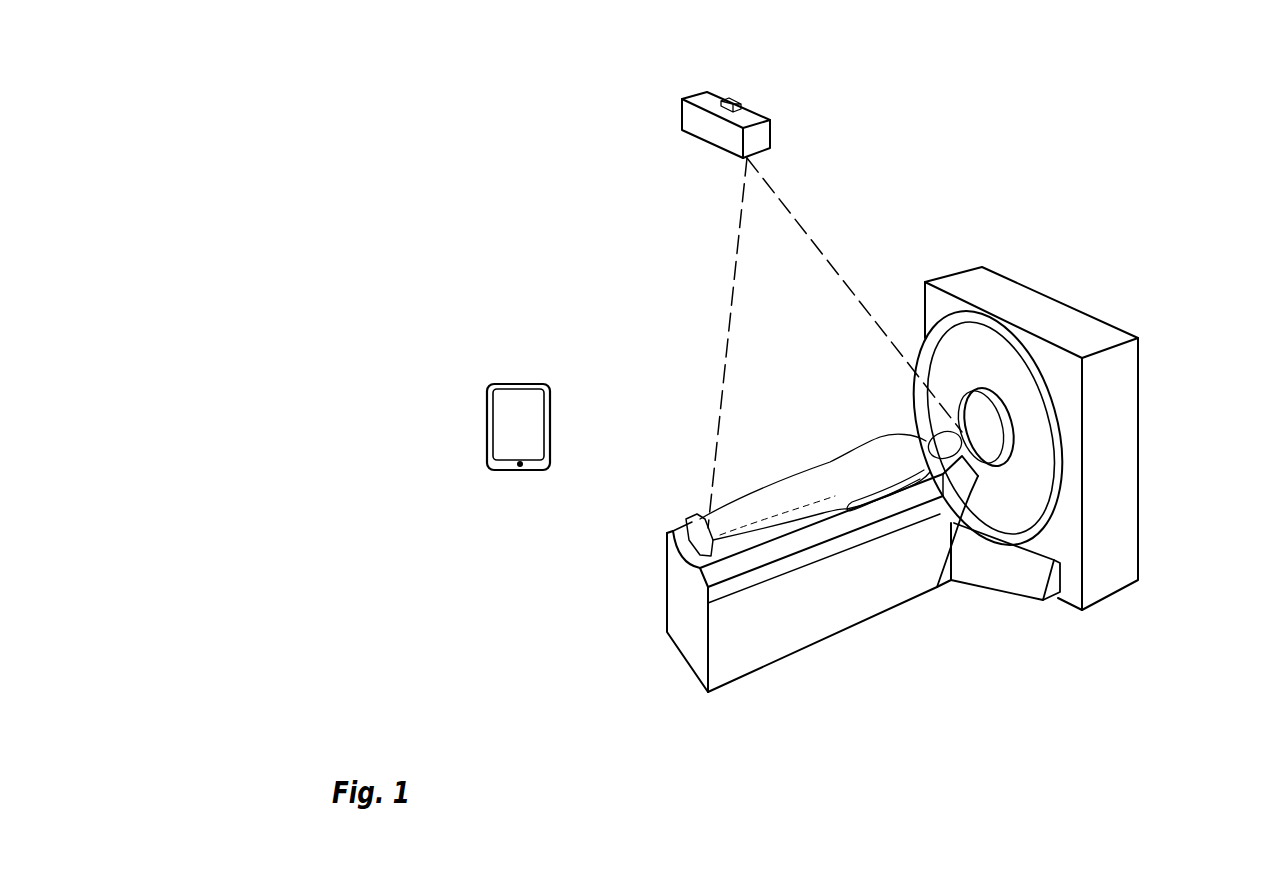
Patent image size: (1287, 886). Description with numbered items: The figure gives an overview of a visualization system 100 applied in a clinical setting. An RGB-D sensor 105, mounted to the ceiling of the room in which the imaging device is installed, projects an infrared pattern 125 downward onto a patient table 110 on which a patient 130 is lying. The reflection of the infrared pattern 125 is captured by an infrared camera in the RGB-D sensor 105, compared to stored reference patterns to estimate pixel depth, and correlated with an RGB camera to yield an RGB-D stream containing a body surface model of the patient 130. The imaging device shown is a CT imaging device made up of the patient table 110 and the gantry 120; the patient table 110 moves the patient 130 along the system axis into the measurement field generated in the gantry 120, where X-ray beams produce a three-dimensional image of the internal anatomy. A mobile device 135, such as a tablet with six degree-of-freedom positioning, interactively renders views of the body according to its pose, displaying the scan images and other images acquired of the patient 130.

The visualization system 100 is at (860, 356).
The RGB-D sensor 105 is at (680, 113).
The patient table 110 is at (688, 670).
The gantry 120 is at (1095, 313).
The infrared pattern 125 is at (822, 247).
The patient 130 is at (690, 527).
The mobile device 135 is at (487, 387).